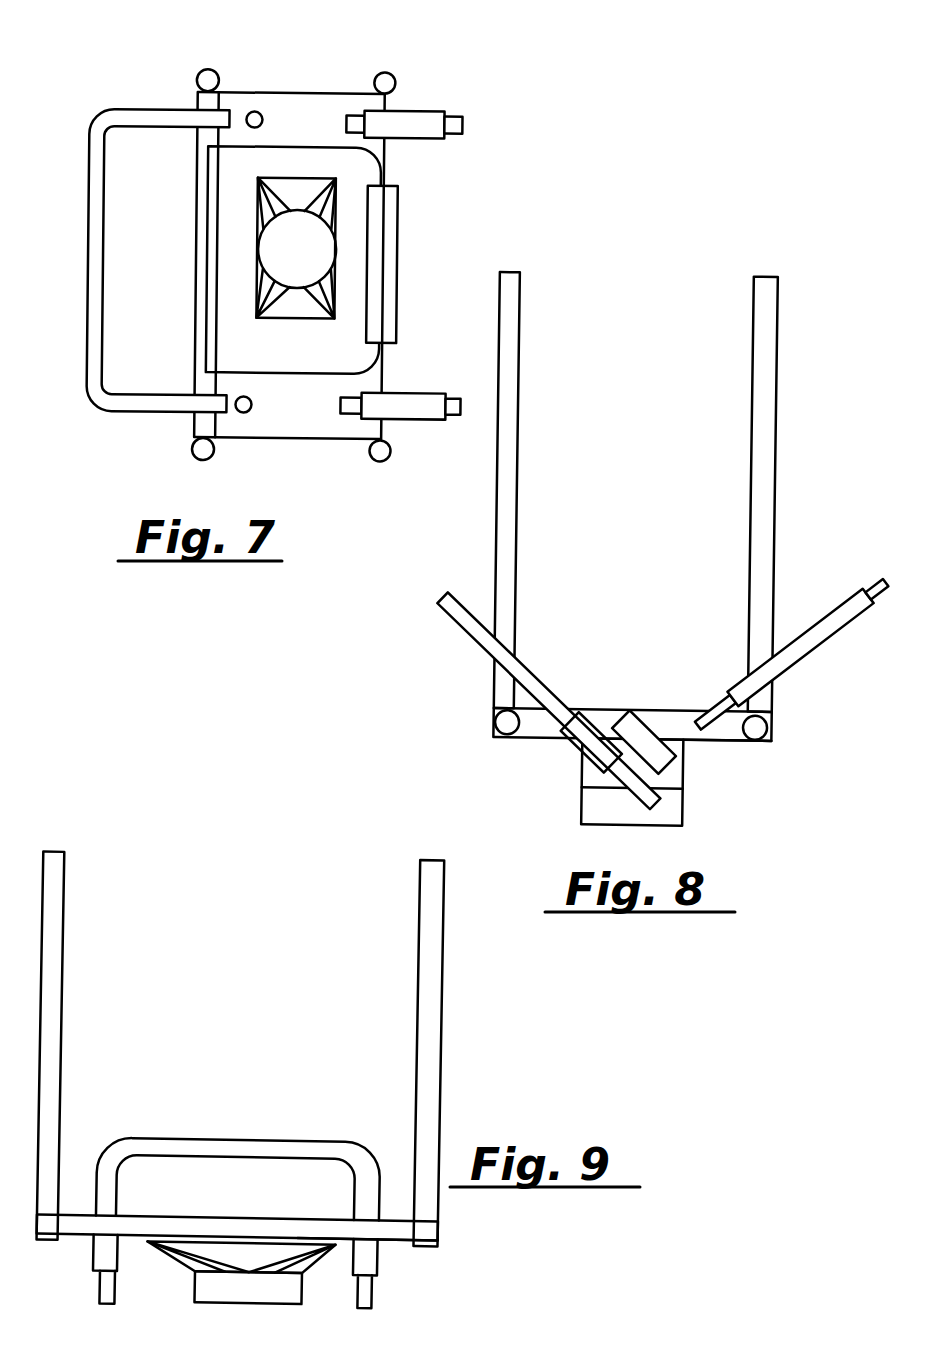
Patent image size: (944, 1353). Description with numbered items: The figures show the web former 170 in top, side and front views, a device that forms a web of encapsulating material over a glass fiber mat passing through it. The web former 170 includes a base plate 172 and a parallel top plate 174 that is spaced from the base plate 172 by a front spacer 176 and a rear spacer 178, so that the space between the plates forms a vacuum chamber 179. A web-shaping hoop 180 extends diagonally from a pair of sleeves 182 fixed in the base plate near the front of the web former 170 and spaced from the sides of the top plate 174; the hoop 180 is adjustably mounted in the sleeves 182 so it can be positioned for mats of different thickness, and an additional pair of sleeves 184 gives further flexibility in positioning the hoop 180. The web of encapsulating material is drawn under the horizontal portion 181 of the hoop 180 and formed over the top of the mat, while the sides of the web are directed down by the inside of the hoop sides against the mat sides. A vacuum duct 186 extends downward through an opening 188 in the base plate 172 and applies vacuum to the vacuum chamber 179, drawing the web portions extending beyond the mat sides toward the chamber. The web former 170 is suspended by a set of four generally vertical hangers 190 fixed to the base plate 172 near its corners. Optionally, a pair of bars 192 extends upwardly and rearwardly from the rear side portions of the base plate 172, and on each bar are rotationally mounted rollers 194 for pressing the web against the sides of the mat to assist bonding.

In FIG. 7, the web former 170 is at (119, 260).
In FIG. 9, the web former 170 is at (236, 1181).
In FIG. 7, the base plate 172 is at (305, 122).
In FIG. 9, the base plate 172 is at (80, 1238).
In FIG. 7, the top plate 174 is at (356, 255).
In FIG. 8, the top plate 174 is at (625, 705).
In FIG. 9, the top plate 174 is at (207, 1214).
In FIG. 9, the front spacer 176 is at (402, 1234).
In FIG. 7, the rear spacer 178 is at (398, 290).
In FIG. 8, the rear spacer 178 is at (772, 728).
In FIG. 8, the vacuum chamber 179 is at (667, 718).
In FIG. 7, the web-shaping hoop 180 is at (88, 272).
In FIG. 8, the web-shaping hoop 180 is at (463, 620).
In FIG. 9, the web-shaping hoop 180 is at (286, 1136).
In FIG. 7, the horizontal portion 181 is at (119, 260).
In FIG. 9, the horizontal portion 181 is at (236, 1181).
In FIG. 8, the sleeves 182 is at (583, 749).
In FIG. 7, the additional sleeves 184 is at (253, 111).
In FIG. 8, the additional sleeves 184 is at (613, 785).
In FIG. 7, the vacuum duct 186 is at (302, 275).
In FIG. 8, the vacuum duct 186 is at (693, 799).
In FIG. 9, the vacuum duct 186 is at (241, 1290).
In FIG. 8, the opening 188 is at (723, 741).
In FIG. 7, the hangers 190 is at (207, 69).
In FIG. 8, the hangers 190 is at (749, 340).
In FIG. 9, the hangers 190 is at (55, 938).
In FIG. 7, the bars 192 is at (456, 122).
In FIG. 7, the rollers 194 is at (430, 227).
In FIG. 8, the rollers 194 is at (823, 637).